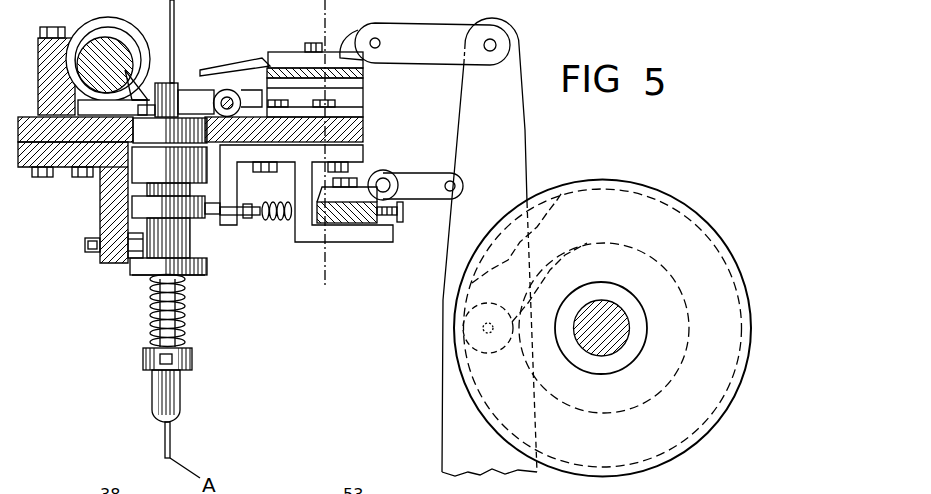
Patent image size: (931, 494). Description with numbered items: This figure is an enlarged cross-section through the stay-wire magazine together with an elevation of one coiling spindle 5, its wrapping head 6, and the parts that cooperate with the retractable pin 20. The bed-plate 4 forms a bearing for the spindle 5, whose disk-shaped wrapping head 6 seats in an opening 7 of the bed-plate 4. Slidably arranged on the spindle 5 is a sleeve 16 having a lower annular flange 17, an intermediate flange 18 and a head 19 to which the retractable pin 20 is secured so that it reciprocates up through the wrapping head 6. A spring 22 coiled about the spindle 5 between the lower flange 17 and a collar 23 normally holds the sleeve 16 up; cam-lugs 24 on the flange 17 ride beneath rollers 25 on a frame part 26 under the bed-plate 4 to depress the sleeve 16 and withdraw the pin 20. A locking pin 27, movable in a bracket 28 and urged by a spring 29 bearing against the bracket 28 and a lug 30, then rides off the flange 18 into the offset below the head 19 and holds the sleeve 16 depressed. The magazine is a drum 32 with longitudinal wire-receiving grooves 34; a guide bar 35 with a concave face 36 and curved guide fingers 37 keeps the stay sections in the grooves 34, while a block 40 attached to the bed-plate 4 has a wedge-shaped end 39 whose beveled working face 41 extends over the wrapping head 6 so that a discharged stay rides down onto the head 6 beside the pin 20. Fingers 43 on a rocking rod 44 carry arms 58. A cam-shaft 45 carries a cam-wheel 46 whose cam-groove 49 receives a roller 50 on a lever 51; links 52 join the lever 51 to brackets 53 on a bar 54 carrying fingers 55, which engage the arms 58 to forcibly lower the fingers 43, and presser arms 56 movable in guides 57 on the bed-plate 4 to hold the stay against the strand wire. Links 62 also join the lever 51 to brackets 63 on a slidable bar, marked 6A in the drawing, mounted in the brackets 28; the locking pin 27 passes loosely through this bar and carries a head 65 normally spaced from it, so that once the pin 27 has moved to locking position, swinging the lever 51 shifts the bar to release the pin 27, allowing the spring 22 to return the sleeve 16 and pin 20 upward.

The bed-plate 4 is at (29, 116).
The coiling spindle 5 is at (181, 399).
The wrapping head 6 is at (190, 137).
The cam block 6A is at (338, 237).
The opening 7 is at (110, 147).
The sleeve 16 is at (196, 273).
The lower annular flange 17 is at (207, 267).
The intermediate flange 18 is at (100, 215).
The head 19 is at (163, 165).
The retractable pin 20 is at (140, 90).
The spring 22 is at (152, 341).
The collar 23 is at (193, 360).
The cam-lug 24 is at (172, 241).
The roller 25 is at (126, 270).
The frame part 26 is at (99, 264).
The locking pin 27 is at (248, 219).
The bracket 28 is at (354, 238).
The spring 29 is at (270, 203).
The lug 30 is at (250, 204).
The magazine drum 32 is at (95, 63).
The wire receiving groove 34 is at (118, 25).
The guide bar 35 is at (38, 41).
The concave face 36 is at (58, 4).
The curved guide finger 37 is at (131, 44).
The wedge-shaped end 39 is at (133, 100).
The block 40 is at (44, 177).
The beveled working face 41 is at (137, 97).
The finger 43 is at (196, 102).
The rocking rod 44 is at (240, 103).
The cam-shaft 45 is at (613, 343).
The cam-wheel 46 is at (677, 425).
The cam-groove 49 is at (604, 348).
The roller 50 is at (492, 347).
The lever 51 is at (489, 247).
The link 52 is at (437, 33).
The bracket 53 is at (382, 24).
The bar 54 is at (363, 78).
The finger 55 is at (254, 61).
The presser arm 56 is at (348, 88).
The guide 57 is at (348, 113).
The arm 58 is at (212, 68).
The link 62 is at (423, 194).
The bracket 63 is at (360, 190).
The head 65 is at (400, 224).